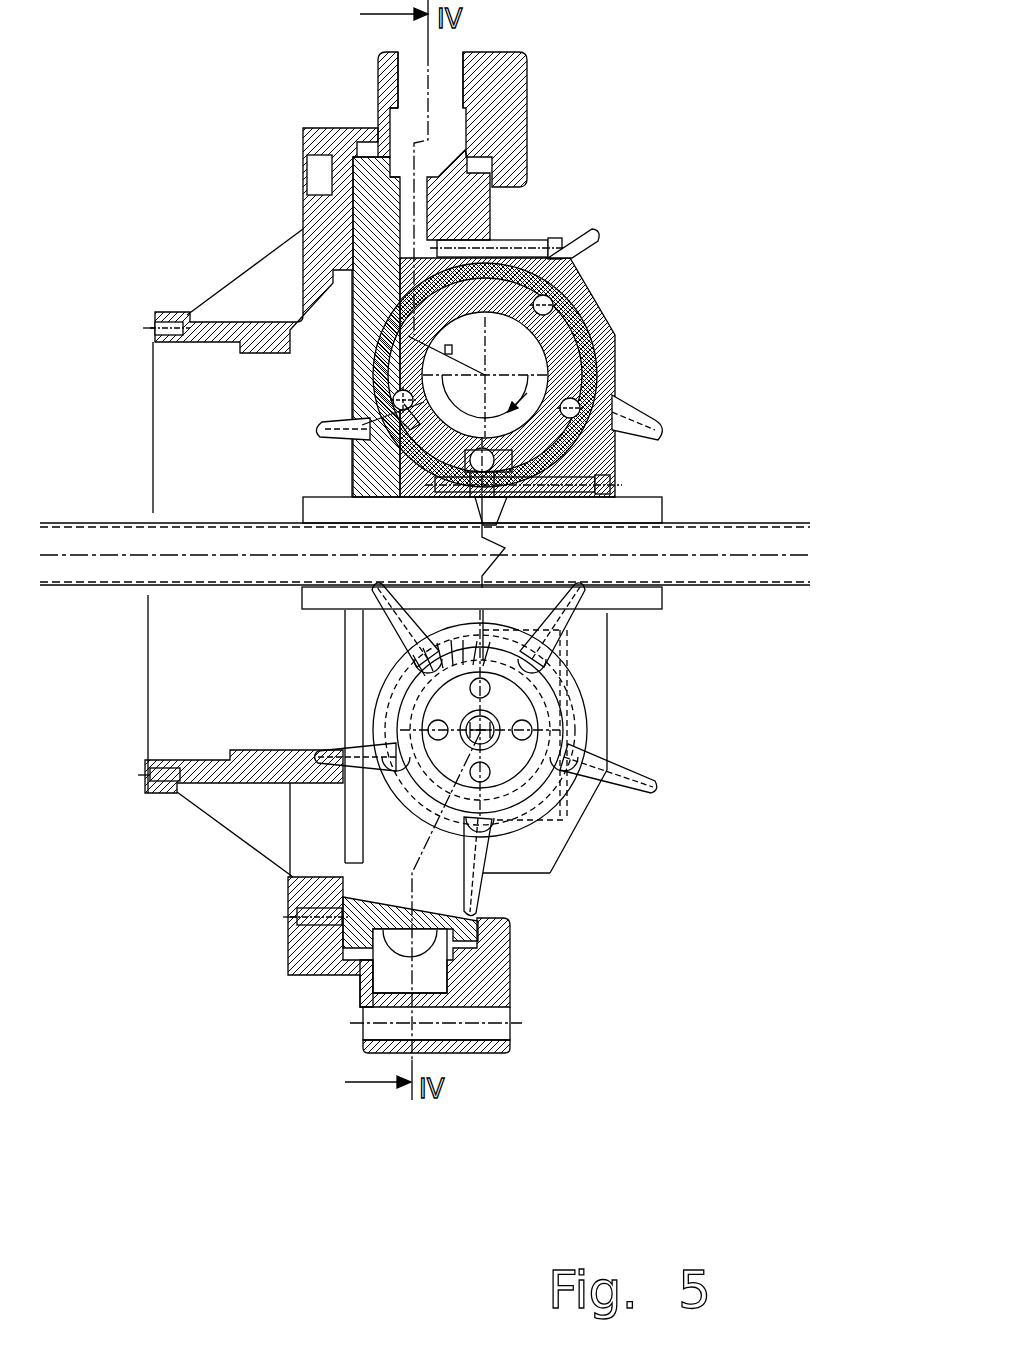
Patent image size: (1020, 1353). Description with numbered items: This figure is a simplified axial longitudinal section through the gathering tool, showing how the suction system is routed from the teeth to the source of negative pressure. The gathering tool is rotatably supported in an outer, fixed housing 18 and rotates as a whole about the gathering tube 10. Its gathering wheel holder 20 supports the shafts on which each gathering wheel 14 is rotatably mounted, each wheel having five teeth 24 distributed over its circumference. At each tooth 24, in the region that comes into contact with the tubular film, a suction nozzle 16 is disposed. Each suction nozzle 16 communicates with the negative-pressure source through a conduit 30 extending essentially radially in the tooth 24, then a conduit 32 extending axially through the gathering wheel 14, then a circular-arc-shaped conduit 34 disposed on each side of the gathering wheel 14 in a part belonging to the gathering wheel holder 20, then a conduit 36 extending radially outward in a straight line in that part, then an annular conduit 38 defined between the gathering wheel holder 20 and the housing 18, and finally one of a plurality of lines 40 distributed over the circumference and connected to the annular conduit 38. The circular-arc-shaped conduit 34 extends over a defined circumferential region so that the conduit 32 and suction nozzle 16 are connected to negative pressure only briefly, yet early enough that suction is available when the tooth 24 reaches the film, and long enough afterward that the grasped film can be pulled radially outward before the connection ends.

The gathering tube 10 is at (717, 538).
The gathering wheel 14 is at (598, 298).
The suction nozzle 16 is at (348, 438).
The housing 18 is at (487, 120).
The gathering wheel holder 20 is at (472, 220).
The tooth 24 is at (655, 417).
The conduit 30 is at (400, 408).
The conduit 32 is at (395, 398).
The circular-arc-shaped conduit 34 is at (437, 447).
The conduit 36 is at (528, 157).
The annular conduit 38 is at (450, 133).
The line 40 is at (447, 75).